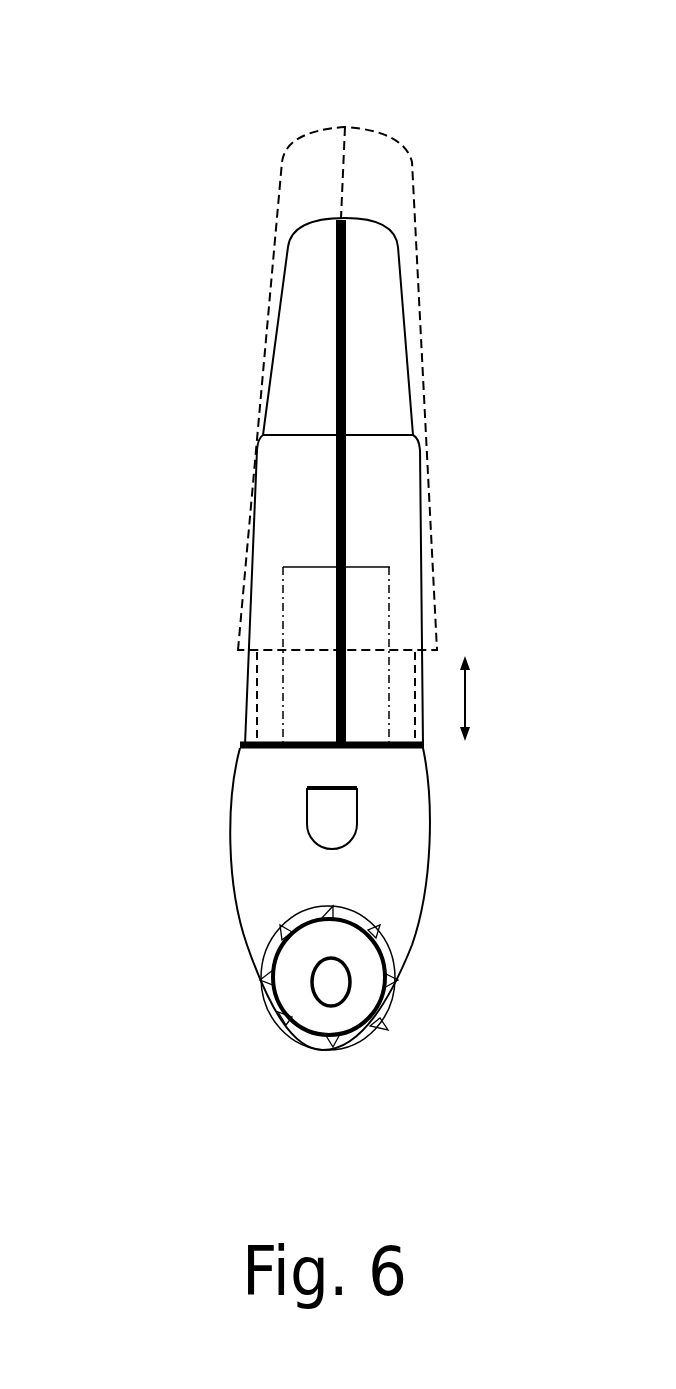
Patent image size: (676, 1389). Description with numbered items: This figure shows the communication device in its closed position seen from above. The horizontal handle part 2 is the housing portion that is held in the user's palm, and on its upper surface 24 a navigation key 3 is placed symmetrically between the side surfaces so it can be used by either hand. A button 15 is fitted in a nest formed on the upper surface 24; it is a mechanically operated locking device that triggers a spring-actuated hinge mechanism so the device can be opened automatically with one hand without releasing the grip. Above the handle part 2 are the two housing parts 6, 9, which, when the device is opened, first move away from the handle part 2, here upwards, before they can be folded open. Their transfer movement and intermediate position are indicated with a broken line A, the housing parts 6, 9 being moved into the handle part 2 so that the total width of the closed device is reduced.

The housing part 6 is at (248, 219).
The housing part 9 is at (430, 220).
The broken line A is at (366, 127).
The handle part 2 is at (303, 899).
The button 15 is at (340, 817).
The upper surface 24 is at (412, 887).
The navigation key 3 is at (367, 990).